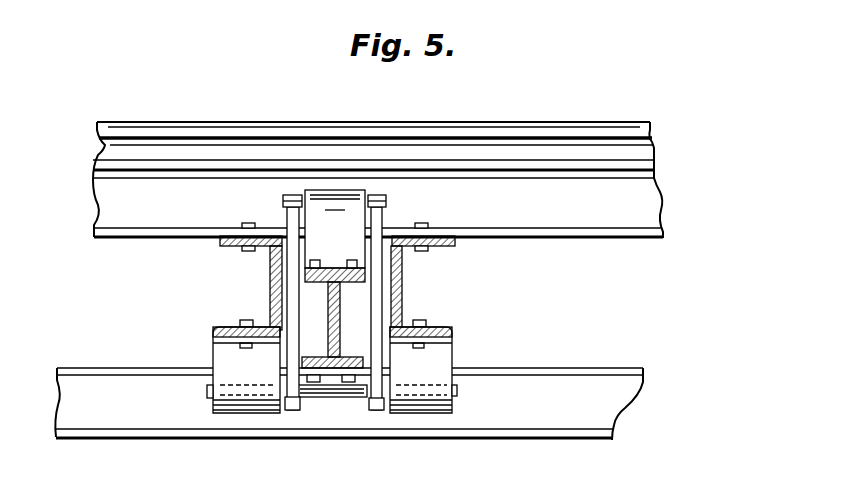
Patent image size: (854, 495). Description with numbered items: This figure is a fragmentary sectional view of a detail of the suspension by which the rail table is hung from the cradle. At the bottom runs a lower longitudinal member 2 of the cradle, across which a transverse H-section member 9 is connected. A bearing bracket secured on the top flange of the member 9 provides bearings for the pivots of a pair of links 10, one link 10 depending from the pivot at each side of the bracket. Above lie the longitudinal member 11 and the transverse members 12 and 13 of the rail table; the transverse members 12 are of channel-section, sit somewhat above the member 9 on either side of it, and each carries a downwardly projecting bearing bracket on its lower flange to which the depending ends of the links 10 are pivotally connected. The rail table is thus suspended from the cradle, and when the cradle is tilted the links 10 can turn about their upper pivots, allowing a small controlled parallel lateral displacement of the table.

The lower longitudinal member 2 is at (160, 385).
The transverse H-section member 9 is at (333, 300).
The link 10 is at (288, 226).
The longitudinal member 11 is at (546, 228).
The transverse member 12 is at (272, 264).
The transverse member 13 is at (585, 127).